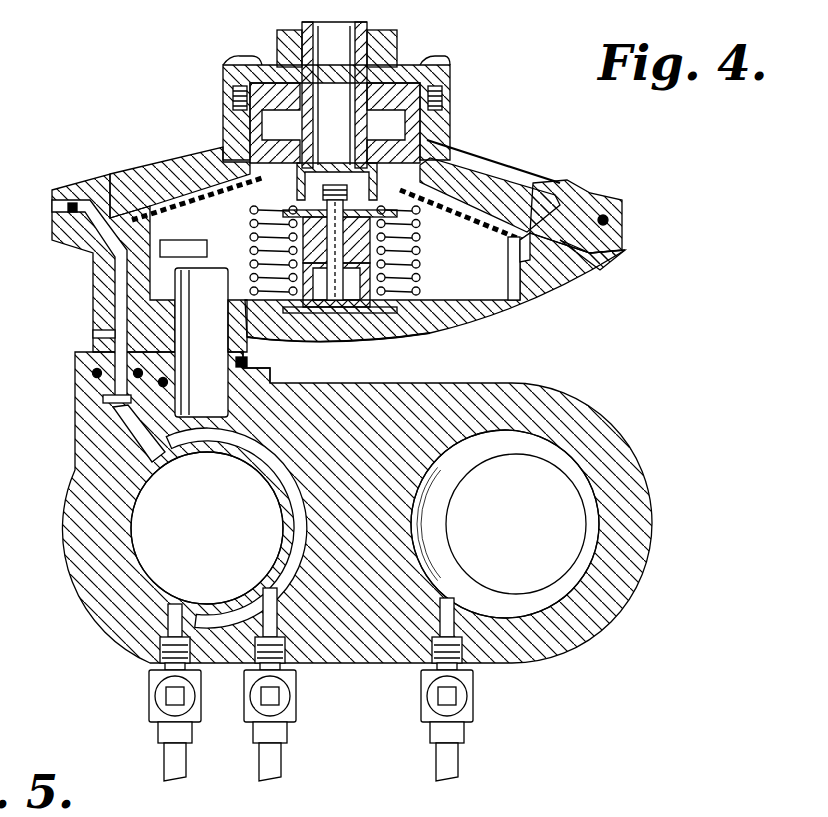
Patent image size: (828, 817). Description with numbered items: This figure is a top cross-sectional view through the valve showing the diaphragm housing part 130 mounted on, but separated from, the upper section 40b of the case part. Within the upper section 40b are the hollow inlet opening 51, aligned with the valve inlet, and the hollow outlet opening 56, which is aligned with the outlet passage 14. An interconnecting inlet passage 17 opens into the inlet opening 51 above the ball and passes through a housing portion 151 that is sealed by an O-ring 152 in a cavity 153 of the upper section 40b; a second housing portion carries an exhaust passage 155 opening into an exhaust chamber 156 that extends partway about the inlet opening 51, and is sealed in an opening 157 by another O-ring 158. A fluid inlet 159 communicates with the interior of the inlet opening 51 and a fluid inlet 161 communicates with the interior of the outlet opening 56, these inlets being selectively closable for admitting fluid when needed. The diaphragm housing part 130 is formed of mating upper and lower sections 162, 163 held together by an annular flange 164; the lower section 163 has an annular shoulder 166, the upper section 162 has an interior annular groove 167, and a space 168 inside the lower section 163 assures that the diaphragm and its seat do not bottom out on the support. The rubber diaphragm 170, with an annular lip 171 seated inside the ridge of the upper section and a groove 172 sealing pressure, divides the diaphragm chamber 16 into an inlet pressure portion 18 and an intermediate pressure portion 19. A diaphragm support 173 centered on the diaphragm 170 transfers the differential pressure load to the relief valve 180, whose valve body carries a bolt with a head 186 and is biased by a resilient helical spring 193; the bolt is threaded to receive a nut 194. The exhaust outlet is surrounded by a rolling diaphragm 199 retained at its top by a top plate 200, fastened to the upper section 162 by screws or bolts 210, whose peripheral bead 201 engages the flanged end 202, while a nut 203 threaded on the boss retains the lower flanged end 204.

The outlet passage 14 is at (578, 527).
The diaphragm chamber 16 is at (488, 192).
The interconnecting passage 17 is at (115, 303).
The inlet pressure portion 18 is at (222, 145).
The intermediate pressure portion 19 is at (457, 283).
The upper section 40b is at (598, 413).
The inlet opening 51 is at (145, 548).
The outlet opening 56 is at (413, 528).
The diaphragm housing part 130 is at (620, 183).
The housing portion 151 is at (95, 330).
The O-ring 152 is at (95, 378).
The cavity 153 is at (118, 403).
The exhaust passage 155 is at (180, 335).
The exhaust chamber 156 is at (300, 512).
The opening 157 is at (247, 362).
The O-ring 158 is at (250, 382).
The fluid inlet 159 is at (167, 657).
The fluid inlet 161 is at (465, 655).
The upper section 162 is at (532, 187).
The lower section 163 is at (422, 338).
The annular flange 164 is at (627, 232).
The annular shoulder 166 is at (552, 240).
The annular groove 167 is at (530, 245).
The space 168 is at (503, 275).
The diaphragm 170 is at (480, 165).
The annular lip 171 is at (108, 198).
The groove 172 is at (113, 257).
The diaphragm support 173 is at (183, 168).
The relief valve 180 is at (135, 195).
The head 186 is at (372, 318).
The helical spring 193 is at (412, 247).
The nut 194 is at (346, 195).
The rolling diaphragm 199 is at (398, 122).
The top plate 200 is at (225, 74).
The peripheral bead 201 is at (380, 65).
The flanged end 202 is at (238, 88).
The nut 203 is at (385, 150).
The lower flanged end 204 is at (418, 157).
The screws or bolts 210 is at (458, 55).